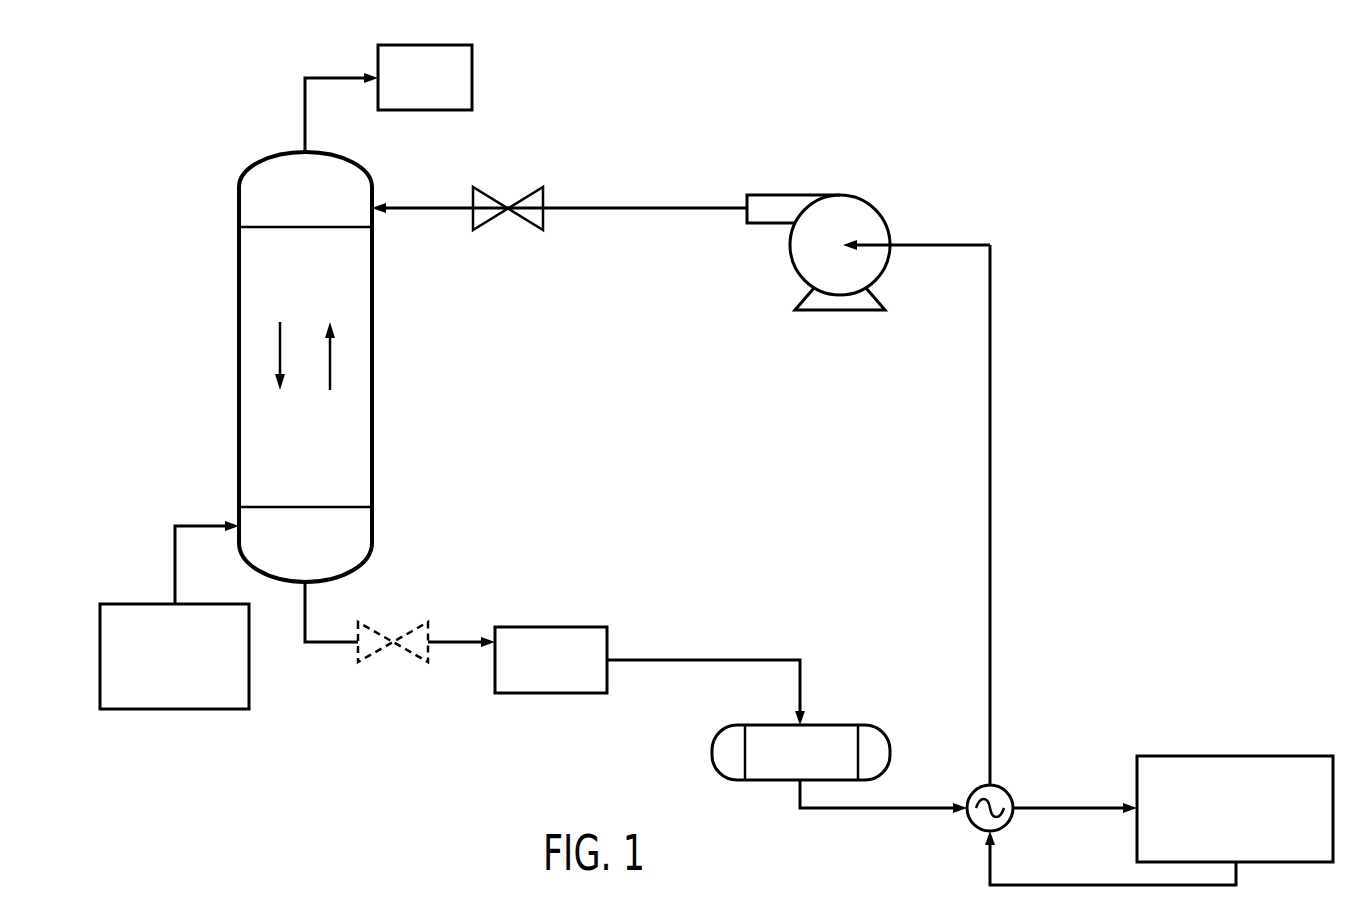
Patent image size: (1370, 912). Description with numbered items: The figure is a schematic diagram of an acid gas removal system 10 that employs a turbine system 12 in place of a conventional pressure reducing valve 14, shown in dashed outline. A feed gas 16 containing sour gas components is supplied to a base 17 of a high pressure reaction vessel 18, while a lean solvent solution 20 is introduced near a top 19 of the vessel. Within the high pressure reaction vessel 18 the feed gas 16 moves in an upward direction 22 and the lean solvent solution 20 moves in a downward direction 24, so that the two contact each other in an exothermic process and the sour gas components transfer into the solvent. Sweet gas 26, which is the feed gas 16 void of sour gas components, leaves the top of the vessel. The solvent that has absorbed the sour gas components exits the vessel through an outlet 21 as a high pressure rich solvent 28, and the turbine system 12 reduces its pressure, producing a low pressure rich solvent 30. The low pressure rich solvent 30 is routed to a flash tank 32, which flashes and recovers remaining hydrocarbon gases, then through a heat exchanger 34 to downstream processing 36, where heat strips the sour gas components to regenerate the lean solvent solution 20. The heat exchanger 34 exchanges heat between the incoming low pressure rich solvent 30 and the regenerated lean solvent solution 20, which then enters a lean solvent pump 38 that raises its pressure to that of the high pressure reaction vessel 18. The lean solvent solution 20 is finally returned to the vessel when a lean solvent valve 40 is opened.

The acid gas removal system 10 is at (1046, 124).
The turbine system 12 is at (611, 562).
The pressure reducing valve 14 is at (417, 594).
The feed gas 16 is at (175, 709).
The base 17 is at (231, 503).
The high pressure reaction vessel 18 is at (372, 367).
The top 19 is at (382, 236).
The lean solvent solution 20 is at (428, 208).
The outlet 21 is at (300, 583).
The upward direction 22 is at (330, 362).
The downward direction 24 is at (282, 350).
The sweet gas 26 is at (473, 75).
The high pressure rich solvent 28 is at (305, 613).
The low pressure rich solvent 30 is at (702, 660).
The flash tank 32 is at (837, 725).
The heat exchanger 34 is at (1000, 783).
The downstream processing 36 is at (1236, 756).
The lean solvent pump 38 is at (847, 195).
The lean solvent valve 40 is at (520, 222).